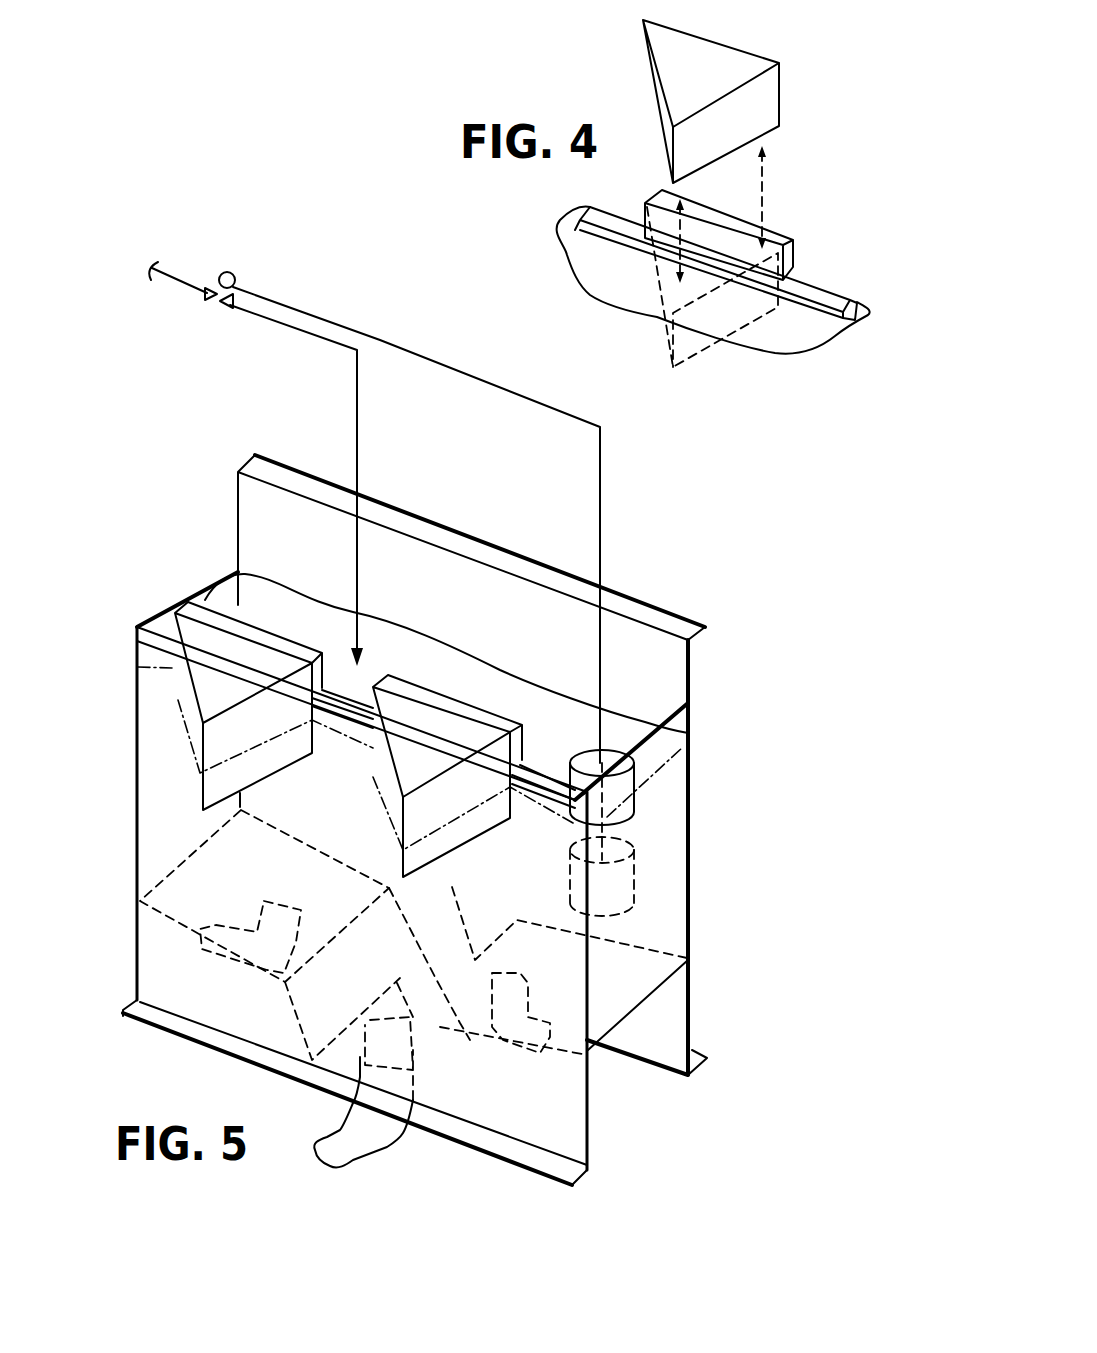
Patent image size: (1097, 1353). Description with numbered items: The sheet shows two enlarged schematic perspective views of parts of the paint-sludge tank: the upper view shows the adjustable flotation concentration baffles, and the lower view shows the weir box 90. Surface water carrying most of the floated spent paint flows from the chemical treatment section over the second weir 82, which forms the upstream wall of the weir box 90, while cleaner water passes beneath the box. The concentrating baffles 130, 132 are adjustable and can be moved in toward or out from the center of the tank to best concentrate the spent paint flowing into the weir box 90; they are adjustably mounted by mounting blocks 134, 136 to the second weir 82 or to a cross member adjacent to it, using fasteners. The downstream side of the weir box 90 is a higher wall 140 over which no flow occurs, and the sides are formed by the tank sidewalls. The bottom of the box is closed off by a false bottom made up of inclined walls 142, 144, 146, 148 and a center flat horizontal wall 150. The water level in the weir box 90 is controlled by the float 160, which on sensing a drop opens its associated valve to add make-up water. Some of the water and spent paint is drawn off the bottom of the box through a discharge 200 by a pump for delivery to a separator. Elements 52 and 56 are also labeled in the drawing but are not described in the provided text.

In FIG. 5, the hidden post 52 is at (642, 855).
In FIG. 5, the front cover plate 56 is at (203, 580).
In FIG. 4, the second weir 82 is at (855, 322).
In FIG. 5, the second weir 82 is at (538, 893).
In FIG. 5, the weir box 90 is at (692, 787).
In FIG. 5, the concentrating baffle 130 is at (228, 658).
In FIG. 4, the concentrating baffle 132 is at (678, 62).
In FIG. 5, the concentrating baffle 132 is at (433, 742).
In FIG. 5, the mounting block 134 is at (258, 633).
In FIG. 4, the mounting block 136 is at (795, 263).
In FIG. 5, the mounting block 136 is at (432, 690).
In FIG. 5, the downstream higher wall 140 is at (535, 632).
In FIG. 5, the inclined wall 142 is at (264, 896).
In FIG. 5, the inclined wall 144 is at (349, 1014).
In FIG. 5, the inclined wall 146 is at (452, 887).
In FIG. 5, the inclined wall 148 is at (513, 996).
In FIG. 5, the center flat wall 150 is at (404, 985).
In FIG. 5, the float 160 is at (623, 809).
In FIG. 5, the discharge 200 is at (373, 1142).